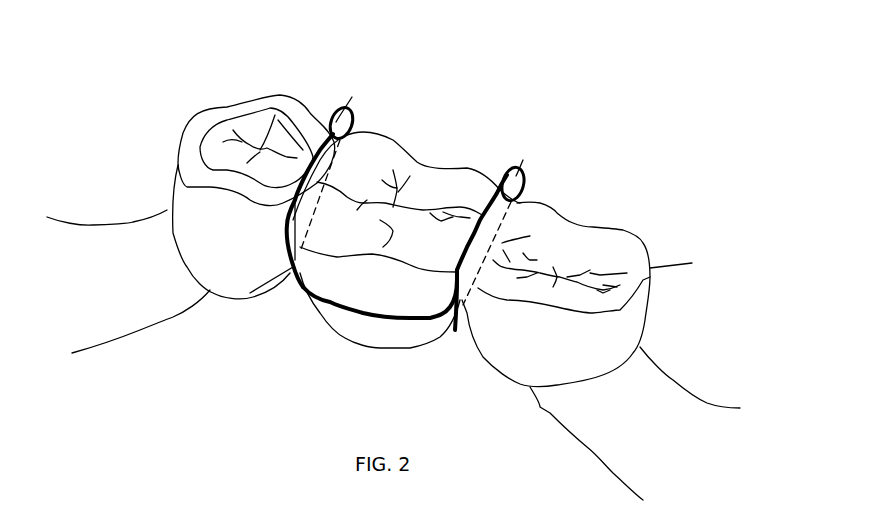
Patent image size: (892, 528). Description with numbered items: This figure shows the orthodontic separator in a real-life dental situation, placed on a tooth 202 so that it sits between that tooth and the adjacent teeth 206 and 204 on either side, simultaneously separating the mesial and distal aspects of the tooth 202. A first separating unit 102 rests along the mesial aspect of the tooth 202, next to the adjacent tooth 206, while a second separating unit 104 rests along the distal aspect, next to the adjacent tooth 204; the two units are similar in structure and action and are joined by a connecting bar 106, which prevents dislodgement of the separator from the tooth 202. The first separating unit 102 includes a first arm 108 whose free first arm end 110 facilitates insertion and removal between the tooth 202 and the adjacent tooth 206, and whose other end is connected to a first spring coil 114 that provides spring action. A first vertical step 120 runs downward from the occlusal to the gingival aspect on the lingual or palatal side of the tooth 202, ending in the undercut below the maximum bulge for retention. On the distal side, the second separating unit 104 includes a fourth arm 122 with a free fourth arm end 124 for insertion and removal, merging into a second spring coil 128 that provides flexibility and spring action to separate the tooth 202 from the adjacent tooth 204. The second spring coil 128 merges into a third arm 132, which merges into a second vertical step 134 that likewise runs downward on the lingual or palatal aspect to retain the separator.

The first separating unit 102 is at (352, 97).
The second separating unit 104 is at (523, 160).
The connecting bar 106 is at (367, 313).
The first arm 108 is at (313, 222).
The free first arm end 110 is at (293, 267).
The first spring coil 114 is at (335, 115).
The first vertical step 120 is at (287, 245).
The fourth arm 122 is at (502, 243).
The free fourth arm end 124 is at (455, 313).
The second spring coil 128 is at (508, 167).
The third arm 132 is at (522, 201).
The second vertical step 134 is at (467, 303).
The tooth 202 is at (400, 147).
The adjacent tooth 204 is at (648, 377).
The adjacent tooth 206 is at (172, 187).